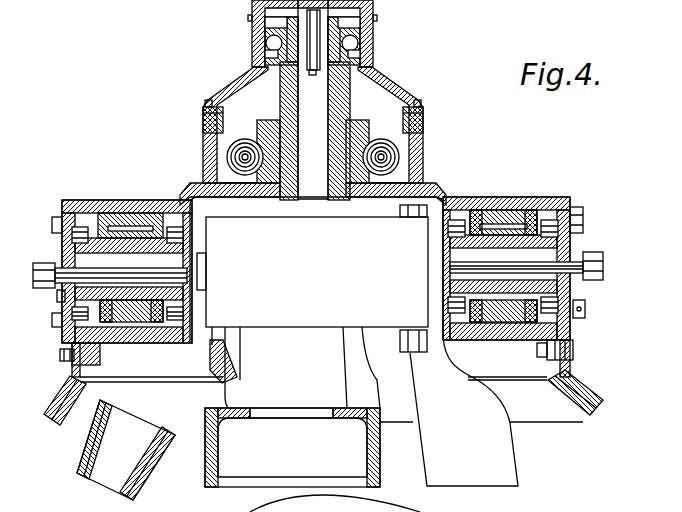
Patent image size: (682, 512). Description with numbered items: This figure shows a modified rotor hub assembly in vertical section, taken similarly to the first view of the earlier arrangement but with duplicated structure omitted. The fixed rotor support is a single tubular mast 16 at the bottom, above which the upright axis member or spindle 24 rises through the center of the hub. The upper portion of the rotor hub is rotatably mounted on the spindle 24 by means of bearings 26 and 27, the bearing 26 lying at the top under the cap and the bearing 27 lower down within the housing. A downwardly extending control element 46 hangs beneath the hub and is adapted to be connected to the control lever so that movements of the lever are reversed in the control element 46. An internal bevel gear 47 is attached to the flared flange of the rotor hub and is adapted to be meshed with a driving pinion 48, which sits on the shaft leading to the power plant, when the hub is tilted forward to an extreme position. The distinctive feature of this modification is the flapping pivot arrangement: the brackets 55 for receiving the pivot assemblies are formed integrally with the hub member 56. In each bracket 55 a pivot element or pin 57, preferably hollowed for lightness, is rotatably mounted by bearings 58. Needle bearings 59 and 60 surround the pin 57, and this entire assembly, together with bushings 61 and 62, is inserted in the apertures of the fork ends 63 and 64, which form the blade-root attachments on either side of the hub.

The tubular mast 16 is at (208, 470).
The upright axis member 24 is at (337, 95).
The bearing 26 is at (375, 35).
The bearing 27 is at (427, 148).
The control element 46 is at (505, 465).
The internal bevel gear 47 is at (53, 425).
The driving pinion 48 is at (82, 452).
The bracket 55 is at (127, 215).
The hub member 56 is at (563, 196).
The pivot element or pin 57 is at (58, 252).
The bearings 58 is at (77, 203).
The needle bearing 59 is at (67, 334).
The needle bearing 60 is at (62, 292).
The bushing 61 is at (122, 218).
The bushing 62 is at (107, 210).
The fork end 63 is at (133, 342).
The fork end 64 is at (110, 343).